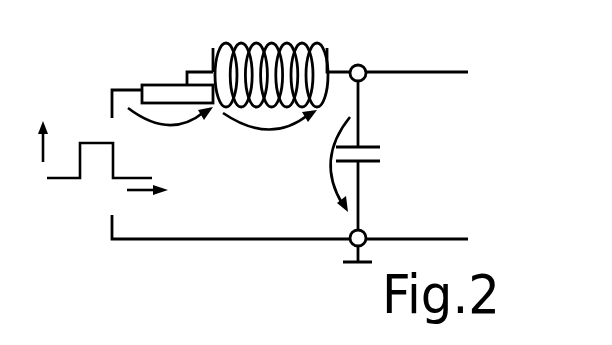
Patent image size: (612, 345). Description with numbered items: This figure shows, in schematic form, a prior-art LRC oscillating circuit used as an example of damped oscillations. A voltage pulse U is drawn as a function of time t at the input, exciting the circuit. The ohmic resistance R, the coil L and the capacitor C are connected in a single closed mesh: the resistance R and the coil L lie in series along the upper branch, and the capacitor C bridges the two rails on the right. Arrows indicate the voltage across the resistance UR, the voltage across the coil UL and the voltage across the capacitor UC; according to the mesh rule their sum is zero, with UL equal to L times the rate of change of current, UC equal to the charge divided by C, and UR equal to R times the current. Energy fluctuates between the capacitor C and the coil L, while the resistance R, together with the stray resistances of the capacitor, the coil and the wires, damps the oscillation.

The ohmic resistance R is at (177, 77).
The coil L is at (281, 55).
The capacitor C is at (370, 154).
The voltage U is at (92, 158).
The time t is at (141, 206).
The voltage across the resistance UR is at (170, 136).
The voltage across the coil UL is at (270, 140).
The voltage across the capacitor UC is at (318, 164).